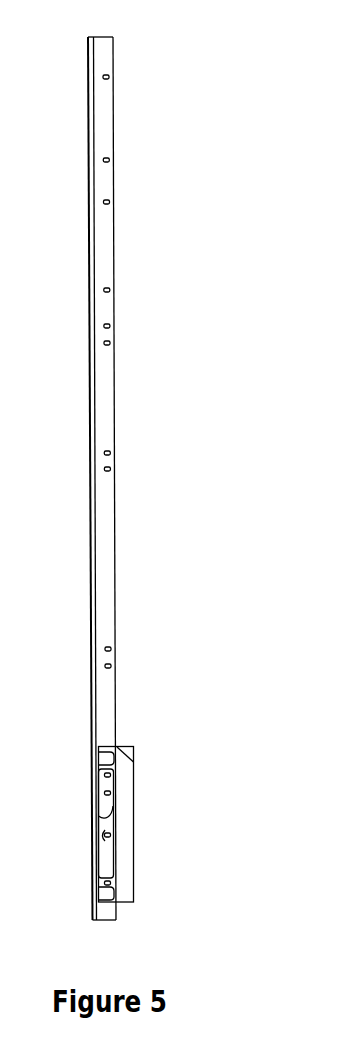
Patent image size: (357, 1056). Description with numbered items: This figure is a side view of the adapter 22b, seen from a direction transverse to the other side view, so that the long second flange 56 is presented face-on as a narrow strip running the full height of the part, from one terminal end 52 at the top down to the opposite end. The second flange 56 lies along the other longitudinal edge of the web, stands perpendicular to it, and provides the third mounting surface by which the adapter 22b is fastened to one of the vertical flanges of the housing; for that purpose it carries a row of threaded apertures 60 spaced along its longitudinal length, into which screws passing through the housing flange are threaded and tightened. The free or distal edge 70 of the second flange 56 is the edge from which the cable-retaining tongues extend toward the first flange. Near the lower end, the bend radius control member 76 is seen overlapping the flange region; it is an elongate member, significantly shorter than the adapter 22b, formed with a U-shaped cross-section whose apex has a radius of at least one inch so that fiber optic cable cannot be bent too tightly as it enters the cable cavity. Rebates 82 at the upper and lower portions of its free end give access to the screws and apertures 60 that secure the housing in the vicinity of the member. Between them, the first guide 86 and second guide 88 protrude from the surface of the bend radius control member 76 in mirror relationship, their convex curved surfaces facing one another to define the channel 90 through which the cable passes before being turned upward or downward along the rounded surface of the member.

The adapter 22b is at (134, 661).
The terminal end 52 is at (101, 48).
The second flange 56 is at (100, 383).
The threaded apertures 60 is at (109, 74).
The distal edge 70 is at (115, 533).
The bend radius control member 76 is at (125, 827).
The rebate 82 is at (101, 753).
The first guide 86 is at (101, 811).
The second guide 88 is at (106, 835).
The channel 90 is at (104, 826).